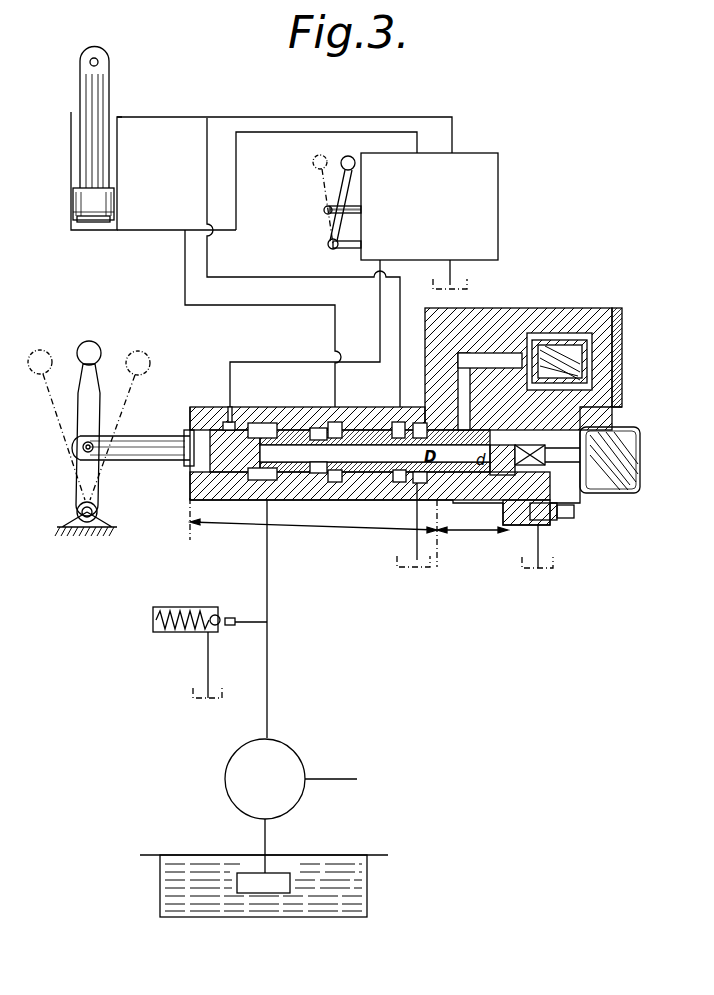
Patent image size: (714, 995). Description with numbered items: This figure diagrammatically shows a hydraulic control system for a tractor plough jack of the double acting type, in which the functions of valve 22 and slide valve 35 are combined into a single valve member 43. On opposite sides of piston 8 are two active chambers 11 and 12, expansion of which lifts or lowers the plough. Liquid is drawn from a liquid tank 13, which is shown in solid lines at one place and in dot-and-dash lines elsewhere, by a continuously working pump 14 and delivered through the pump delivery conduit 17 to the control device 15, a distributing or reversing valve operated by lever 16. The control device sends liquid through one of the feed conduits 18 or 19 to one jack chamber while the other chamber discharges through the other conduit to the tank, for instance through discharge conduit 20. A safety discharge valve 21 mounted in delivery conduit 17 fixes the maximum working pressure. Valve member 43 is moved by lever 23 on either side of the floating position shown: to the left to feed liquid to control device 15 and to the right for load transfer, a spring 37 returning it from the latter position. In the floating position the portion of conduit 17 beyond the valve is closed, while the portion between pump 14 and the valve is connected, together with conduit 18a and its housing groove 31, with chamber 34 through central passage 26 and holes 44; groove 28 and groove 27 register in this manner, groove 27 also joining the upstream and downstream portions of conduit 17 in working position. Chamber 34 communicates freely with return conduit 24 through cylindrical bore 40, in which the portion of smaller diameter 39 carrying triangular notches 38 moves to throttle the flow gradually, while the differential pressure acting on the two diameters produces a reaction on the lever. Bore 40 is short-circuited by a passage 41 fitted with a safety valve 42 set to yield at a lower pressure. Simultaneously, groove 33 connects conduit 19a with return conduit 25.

The piston 8 is at (73, 199).
The active chamber 11 is at (90, 226).
The active chamber 12 is at (80, 152).
The liquid tank 13 is at (330, 917).
The pump 14 is at (277, 757).
The control device 15 is at (483, 205).
The lever 16 is at (345, 176).
The pump delivery conduit 17 is at (230, 384).
The feed conduit 18 is at (140, 232).
The conduit 18a is at (228, 306).
The feed conduit 19 is at (188, 116).
The conduit 19a is at (263, 277).
The discharge conduit 20 is at (450, 268).
The safety discharge valve 21 is at (197, 607).
The valve 22 is at (340, 498).
The lever 23 is at (80, 392).
The return conduit 24 is at (540, 548).
The return conduit 25 is at (417, 540).
The central passage 26 is at (360, 470).
The groove 27 is at (262, 438).
The groove 28 is at (320, 428).
The groove 31 is at (340, 425).
The groove 33 is at (403, 425).
The chamber 34 is at (490, 500).
The slide valve 35 is at (472, 520).
The spring 37 is at (625, 493).
The triangular notches 38 is at (522, 470).
The portion of smaller diameter 39 is at (560, 432).
The cylindrical bore 40 is at (545, 510).
The passage 41 is at (460, 375).
The safety valve 42 is at (533, 335).
The valve member 43 is at (148, 449).
The holes 44 is at (445, 430).